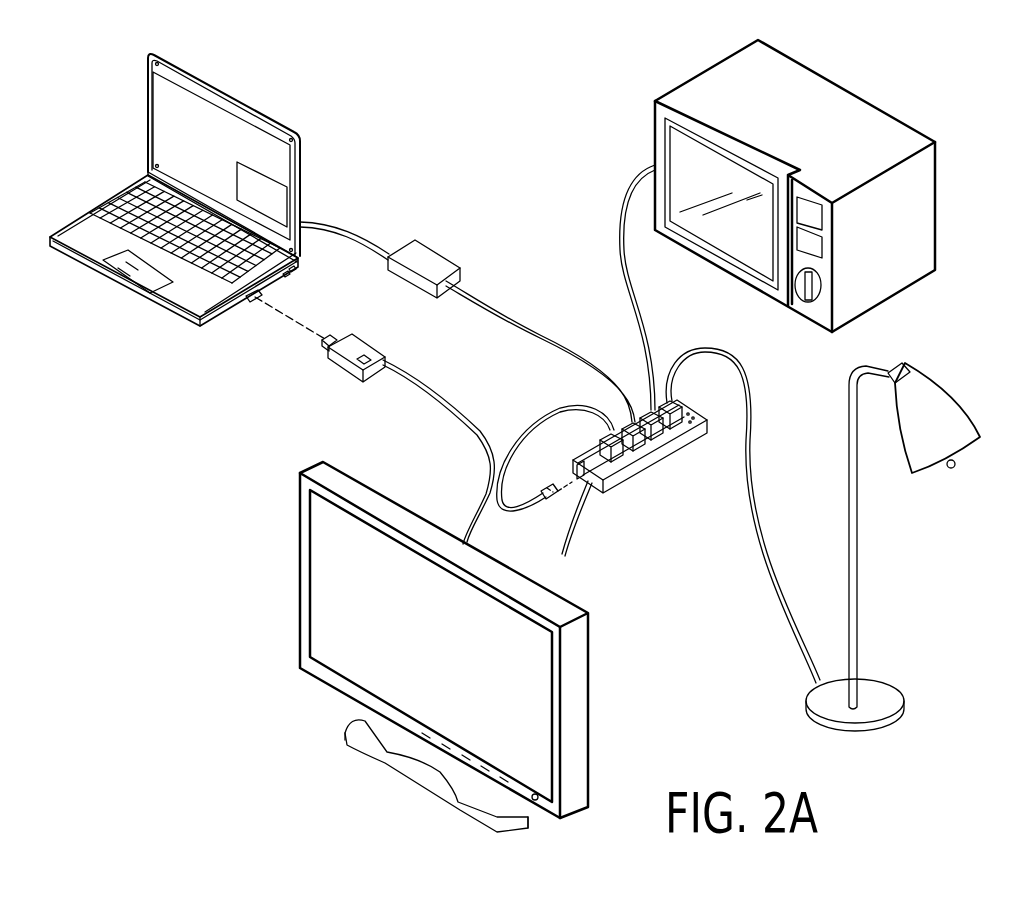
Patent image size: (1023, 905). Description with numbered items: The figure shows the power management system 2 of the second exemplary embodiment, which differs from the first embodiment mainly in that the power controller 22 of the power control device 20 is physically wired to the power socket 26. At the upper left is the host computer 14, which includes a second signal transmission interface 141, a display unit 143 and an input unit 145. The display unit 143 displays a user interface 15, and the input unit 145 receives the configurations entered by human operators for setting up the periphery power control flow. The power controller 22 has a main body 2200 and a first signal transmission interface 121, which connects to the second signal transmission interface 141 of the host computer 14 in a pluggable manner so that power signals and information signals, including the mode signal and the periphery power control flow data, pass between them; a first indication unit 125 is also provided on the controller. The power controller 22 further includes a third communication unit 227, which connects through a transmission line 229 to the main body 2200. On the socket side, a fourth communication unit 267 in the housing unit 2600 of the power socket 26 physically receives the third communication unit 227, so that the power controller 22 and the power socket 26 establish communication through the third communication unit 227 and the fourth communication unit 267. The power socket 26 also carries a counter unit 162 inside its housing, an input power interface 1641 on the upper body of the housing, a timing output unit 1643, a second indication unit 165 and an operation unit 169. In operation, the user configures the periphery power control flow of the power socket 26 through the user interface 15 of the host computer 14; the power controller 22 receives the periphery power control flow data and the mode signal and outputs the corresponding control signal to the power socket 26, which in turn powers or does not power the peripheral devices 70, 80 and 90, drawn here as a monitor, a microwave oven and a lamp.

The power management system 2 is at (27, 73).
The host computer 14 is at (323, 122).
The display unit 143 is at (220, 133).
The input unit 145 is at (130, 215).
The user interface 15 is at (277, 181).
The second signal transmission interface 141 is at (253, 300).
The power control device 20 is at (228, 378).
The power controller 22 is at (320, 372).
The main body 2200 is at (363, 338).
The first signal transmission interface 121 is at (328, 335).
The first indication unit 125 is at (355, 367).
The transmission line 229 is at (443, 402).
The peripheral device 70 is at (304, 521).
The peripheral device 80 is at (918, 198).
The peripheral device 90 is at (945, 408).
The power socket 26 is at (712, 418).
The housing unit 2600 is at (650, 467).
The timing output unit 1643 is at (667, 440).
The counter unit 162 is at (588, 450).
The fourth communication unit 267 is at (577, 457).
The third communication unit 227 is at (552, 485).
The operation unit 169 is at (677, 400).
The second indication unit 165 is at (623, 540).
The input power interface 1641 is at (575, 542).